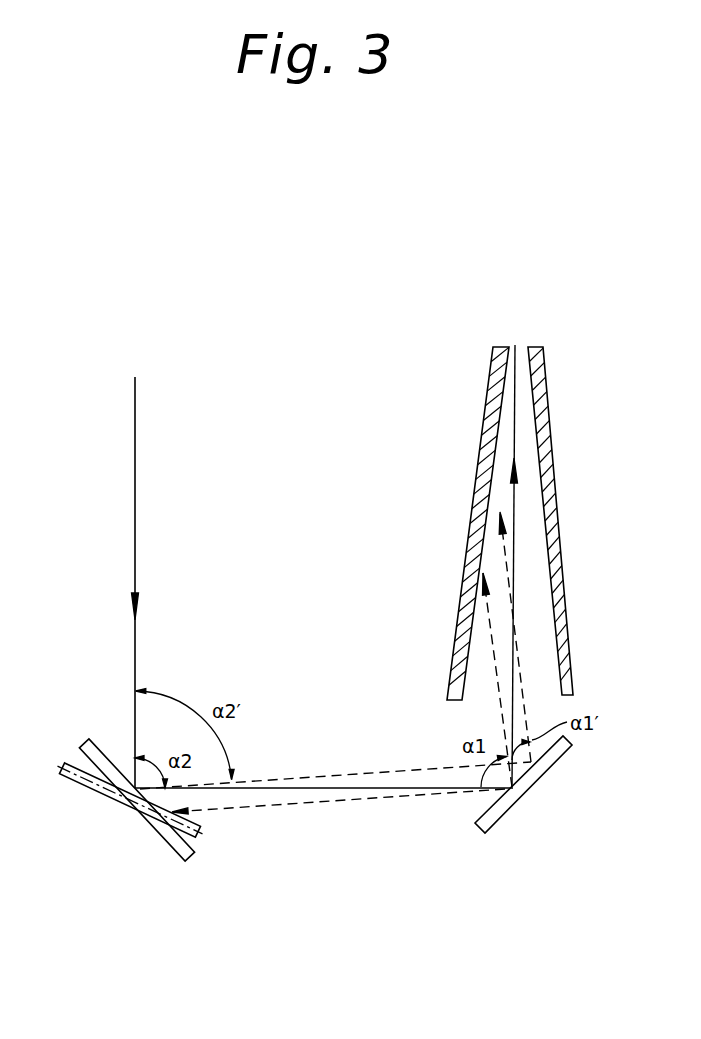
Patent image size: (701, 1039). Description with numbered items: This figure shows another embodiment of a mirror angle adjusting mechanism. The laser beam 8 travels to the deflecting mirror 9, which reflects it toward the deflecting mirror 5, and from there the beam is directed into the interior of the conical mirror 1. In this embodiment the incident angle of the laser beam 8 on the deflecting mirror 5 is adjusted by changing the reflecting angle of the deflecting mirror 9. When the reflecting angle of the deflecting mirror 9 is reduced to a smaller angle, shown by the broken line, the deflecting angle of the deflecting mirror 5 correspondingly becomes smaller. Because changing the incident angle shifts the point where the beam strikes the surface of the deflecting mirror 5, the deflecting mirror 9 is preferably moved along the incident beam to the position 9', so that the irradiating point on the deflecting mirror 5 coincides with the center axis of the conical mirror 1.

The conical mirror 1 is at (563, 555).
The deflecting mirror 5 is at (530, 788).
The laser beam 8 is at (135, 492).
The deflecting mirror 9 is at (116, 779).
The shifted position of deflecting mirror 9' is at (130, 822).